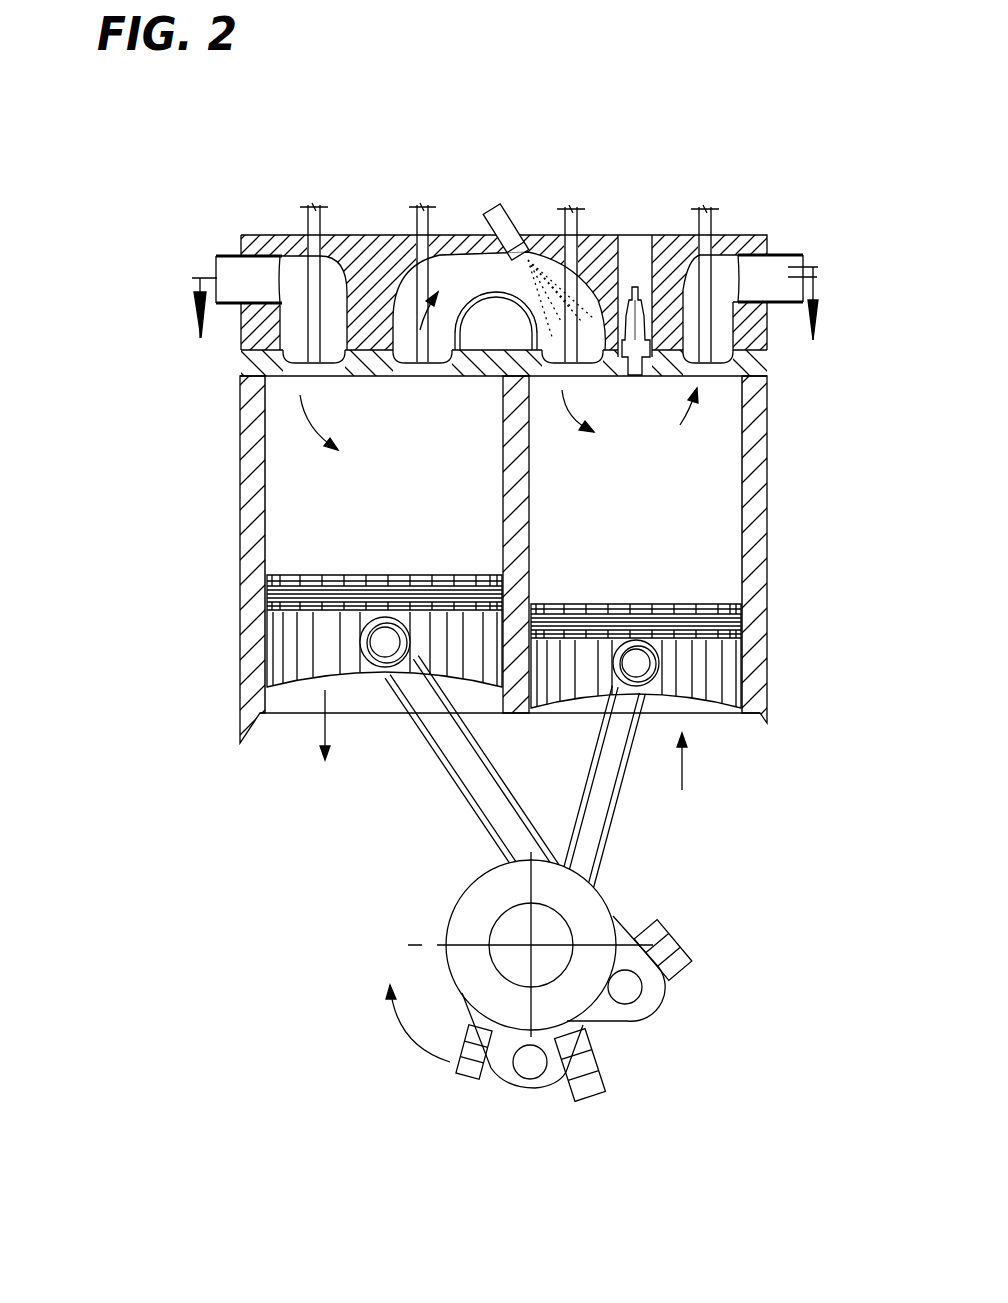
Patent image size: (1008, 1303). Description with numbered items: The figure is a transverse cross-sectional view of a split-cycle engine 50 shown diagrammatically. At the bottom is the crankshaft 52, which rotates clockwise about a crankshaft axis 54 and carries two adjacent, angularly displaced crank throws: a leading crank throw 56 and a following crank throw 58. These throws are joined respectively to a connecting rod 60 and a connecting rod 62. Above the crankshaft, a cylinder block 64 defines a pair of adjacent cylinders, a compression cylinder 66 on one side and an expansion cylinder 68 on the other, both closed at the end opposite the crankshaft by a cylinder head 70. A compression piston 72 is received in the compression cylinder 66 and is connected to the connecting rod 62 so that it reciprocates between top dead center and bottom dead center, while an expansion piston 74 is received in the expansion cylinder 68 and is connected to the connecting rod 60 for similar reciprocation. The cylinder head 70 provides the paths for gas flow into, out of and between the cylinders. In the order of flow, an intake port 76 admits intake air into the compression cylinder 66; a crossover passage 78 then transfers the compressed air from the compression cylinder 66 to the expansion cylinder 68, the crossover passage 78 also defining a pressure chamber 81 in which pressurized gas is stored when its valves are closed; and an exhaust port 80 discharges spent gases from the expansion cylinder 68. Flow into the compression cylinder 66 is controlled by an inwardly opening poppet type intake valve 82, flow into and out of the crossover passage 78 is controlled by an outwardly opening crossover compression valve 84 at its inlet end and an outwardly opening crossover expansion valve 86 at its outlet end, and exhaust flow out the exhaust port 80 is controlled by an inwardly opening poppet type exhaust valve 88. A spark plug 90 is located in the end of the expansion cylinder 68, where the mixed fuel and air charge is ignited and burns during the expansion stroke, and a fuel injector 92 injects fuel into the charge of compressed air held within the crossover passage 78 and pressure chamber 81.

The split-cycle engine 50 is at (125, 432).
The crankshaft 52 is at (515, 927).
The crankshaft axis 54 is at (525, 943).
The leading crank throw 56 is at (527, 1090).
The following crank throw 58 is at (643, 1013).
The connecting rod 60 is at (608, 840).
The connecting rod 62 is at (468, 793).
The cylinder block 64 is at (782, 638).
The compression cylinder 66 is at (272, 541).
The expansion cylinder 68 is at (747, 480).
The cylinder head 70 is at (778, 343).
The compression piston 72 is at (304, 688).
The expansion piston 74 is at (703, 712).
The intake port 76 is at (222, 255).
The crossover passage 78 is at (467, 268).
The exhaust port 80 is at (787, 255).
The pressure chamber 81 is at (478, 265).
The intake valve 82 is at (306, 228).
The crossover compression valve 84 is at (416, 228).
The crossover expansion valve 86 is at (578, 230).
The exhaust valve 88 is at (712, 230).
The spark plug 90 is at (635, 287).
The fuel injector 92 is at (502, 207).